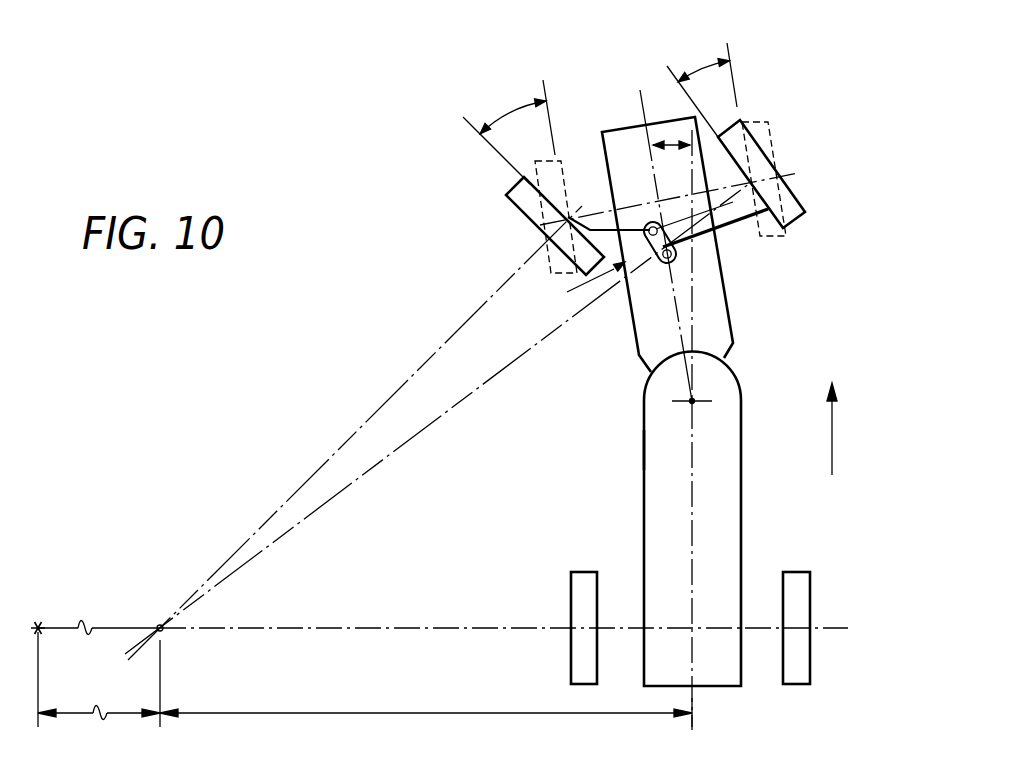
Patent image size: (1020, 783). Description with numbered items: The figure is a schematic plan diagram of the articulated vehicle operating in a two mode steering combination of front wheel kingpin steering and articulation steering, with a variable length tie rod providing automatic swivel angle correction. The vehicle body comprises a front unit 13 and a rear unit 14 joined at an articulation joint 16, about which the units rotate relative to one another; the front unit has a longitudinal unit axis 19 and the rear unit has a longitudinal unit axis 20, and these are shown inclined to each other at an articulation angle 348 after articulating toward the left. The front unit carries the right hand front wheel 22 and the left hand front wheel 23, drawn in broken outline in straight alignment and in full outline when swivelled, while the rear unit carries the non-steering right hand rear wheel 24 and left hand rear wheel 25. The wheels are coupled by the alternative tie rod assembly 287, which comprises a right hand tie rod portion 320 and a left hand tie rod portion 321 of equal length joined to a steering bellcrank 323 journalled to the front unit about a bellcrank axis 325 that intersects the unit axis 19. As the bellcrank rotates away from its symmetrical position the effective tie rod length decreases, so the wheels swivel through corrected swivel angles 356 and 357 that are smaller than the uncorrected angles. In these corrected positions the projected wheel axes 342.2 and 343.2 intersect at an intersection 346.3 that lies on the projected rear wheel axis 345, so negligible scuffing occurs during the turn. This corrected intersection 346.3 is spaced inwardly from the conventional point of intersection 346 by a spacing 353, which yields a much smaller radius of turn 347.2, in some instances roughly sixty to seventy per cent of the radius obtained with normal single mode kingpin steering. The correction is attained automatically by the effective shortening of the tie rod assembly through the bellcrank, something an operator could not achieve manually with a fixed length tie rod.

The front unit 13 is at (646, 342).
The rear unit 14 is at (662, 451).
The articulation joint 16 is at (688, 403).
The longitudinal unit axis of front unit 19 is at (643, 104).
The longitudinal unit axis of rear unit 20 is at (692, 486).
The right hand front wheel 22 is at (793, 210).
The left hand front wheel 23 is at (510, 193).
The right hand rear wheel 24 is at (797, 586).
The left hand rear wheel 25 is at (582, 584).
The tie rod assembly 287 is at (571, 286).
The right hand tie rod portion 320 is at (743, 218).
The left hand tie rod portion 321 is at (606, 229).
The steering bellcrank 323 is at (678, 250).
The bellcrank axis 325 is at (667, 260).
The axis of right hand front wheel 342.2 is at (420, 436).
The axis of left hand front wheel 343.2 is at (380, 404).
The rear wheel axis 345 is at (430, 631).
The point of intersection 346 is at (40, 622).
The intersection 346.3 is at (163, 633).
The radius of turn 347.2 is at (438, 714).
The angle 348 is at (672, 140).
The spacing 353 is at (75, 716).
The corrected swivel angle of right hand wheel 356 is at (705, 68).
The corrected swivel angle of left hand wheel 357 is at (515, 110).